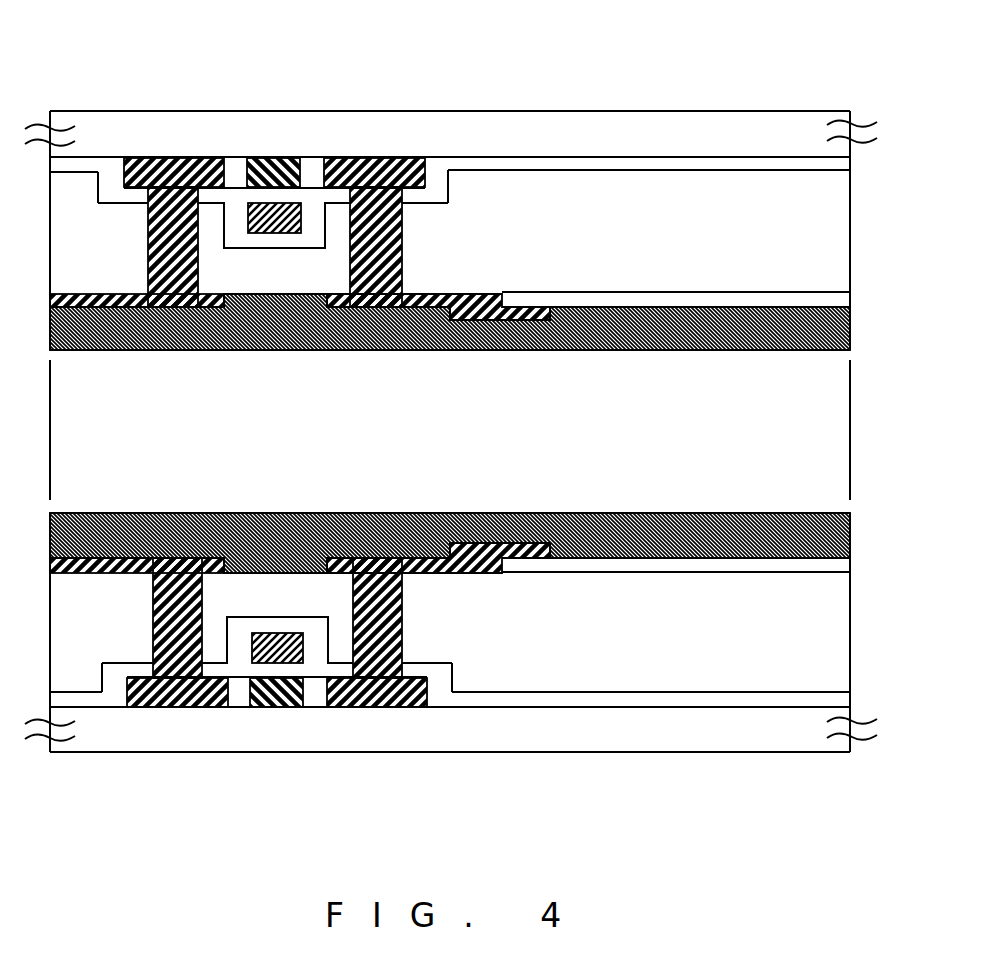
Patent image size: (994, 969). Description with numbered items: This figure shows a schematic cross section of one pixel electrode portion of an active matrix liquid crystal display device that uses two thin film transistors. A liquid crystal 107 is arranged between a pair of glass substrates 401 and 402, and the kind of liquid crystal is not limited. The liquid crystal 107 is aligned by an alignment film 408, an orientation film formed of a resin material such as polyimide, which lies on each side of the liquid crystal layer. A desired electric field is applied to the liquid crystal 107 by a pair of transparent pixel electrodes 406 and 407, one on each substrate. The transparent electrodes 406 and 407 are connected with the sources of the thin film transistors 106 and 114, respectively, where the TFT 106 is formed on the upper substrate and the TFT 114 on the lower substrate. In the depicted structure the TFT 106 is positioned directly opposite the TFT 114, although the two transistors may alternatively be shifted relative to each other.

The thin film transistor 106 is at (425, 97).
The thin film transistor 114 is at (428, 768).
The glass substrate 401 is at (572, 125).
The glass substrate 402 is at (700, 740).
The transparent electrode 406 is at (683, 298).
The transparent electrode 407 is at (670, 563).
The alignment film 408 is at (775, 320).
The liquid crystal 107 is at (628, 482).